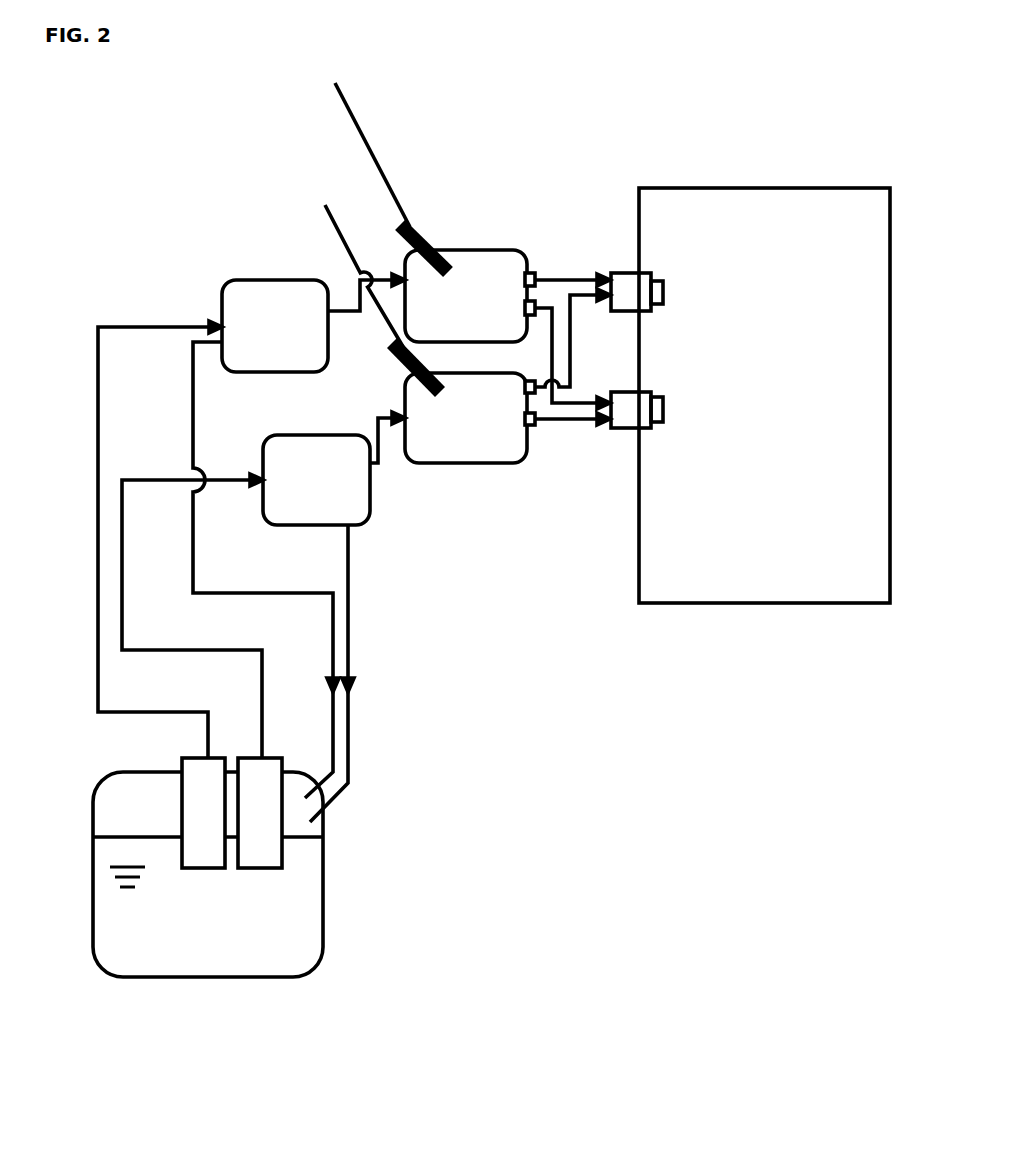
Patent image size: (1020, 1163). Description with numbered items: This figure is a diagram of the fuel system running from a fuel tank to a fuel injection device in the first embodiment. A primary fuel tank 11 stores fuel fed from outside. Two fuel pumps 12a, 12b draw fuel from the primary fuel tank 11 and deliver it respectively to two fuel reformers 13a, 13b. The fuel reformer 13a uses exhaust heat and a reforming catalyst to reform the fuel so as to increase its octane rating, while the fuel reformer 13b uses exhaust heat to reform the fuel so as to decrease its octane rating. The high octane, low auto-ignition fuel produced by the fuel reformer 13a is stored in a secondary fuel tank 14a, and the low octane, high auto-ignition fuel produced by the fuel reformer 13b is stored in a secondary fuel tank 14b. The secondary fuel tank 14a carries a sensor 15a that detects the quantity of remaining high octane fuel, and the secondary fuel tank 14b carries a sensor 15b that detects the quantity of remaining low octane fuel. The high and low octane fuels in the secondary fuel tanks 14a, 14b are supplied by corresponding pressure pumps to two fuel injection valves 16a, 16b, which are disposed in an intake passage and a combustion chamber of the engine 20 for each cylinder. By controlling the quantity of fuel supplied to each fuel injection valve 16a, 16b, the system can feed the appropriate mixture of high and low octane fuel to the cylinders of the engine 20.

The primary fuel tank 11 is at (112, 790).
The fuel pump 12a is at (205, 858).
The fuel pump 12b is at (262, 858).
The fuel reformer 13a is at (247, 293).
The fuel reformer 13b is at (268, 463).
The secondary fuel tank 14a is at (465, 257).
The secondary fuel tank 14b is at (475, 452).
The sensor 15a is at (420, 227).
The sensor 15b is at (392, 352).
The fuel injection valve 16a is at (637, 290).
The fuel injection valve 16b is at (637, 407).
The engine 20 is at (838, 208).